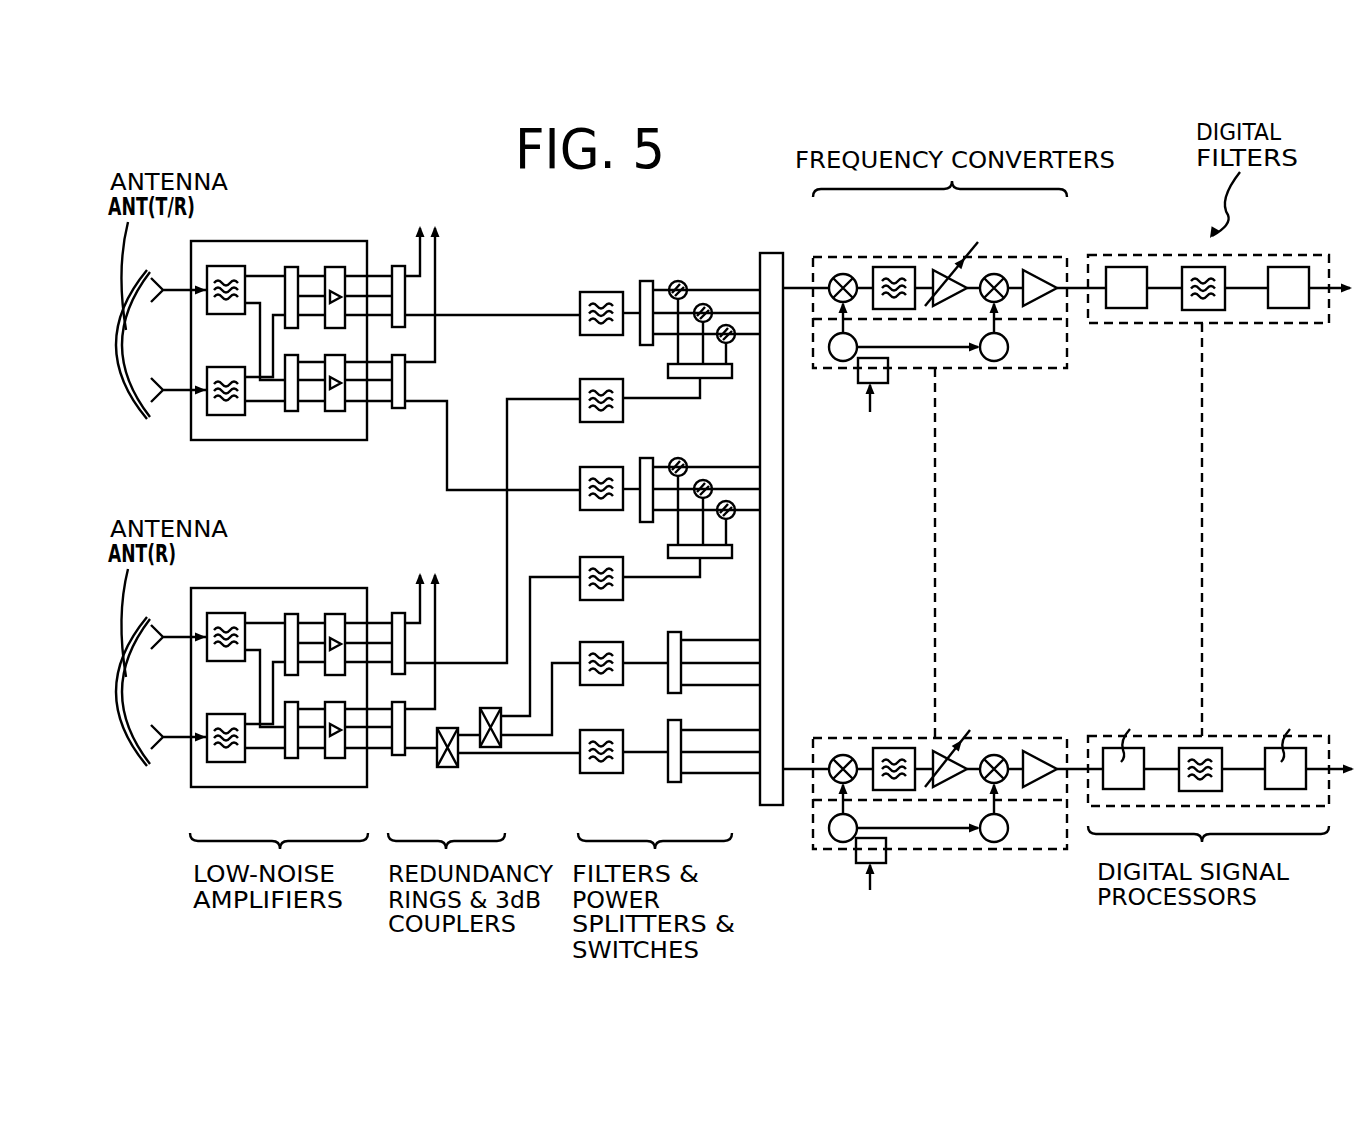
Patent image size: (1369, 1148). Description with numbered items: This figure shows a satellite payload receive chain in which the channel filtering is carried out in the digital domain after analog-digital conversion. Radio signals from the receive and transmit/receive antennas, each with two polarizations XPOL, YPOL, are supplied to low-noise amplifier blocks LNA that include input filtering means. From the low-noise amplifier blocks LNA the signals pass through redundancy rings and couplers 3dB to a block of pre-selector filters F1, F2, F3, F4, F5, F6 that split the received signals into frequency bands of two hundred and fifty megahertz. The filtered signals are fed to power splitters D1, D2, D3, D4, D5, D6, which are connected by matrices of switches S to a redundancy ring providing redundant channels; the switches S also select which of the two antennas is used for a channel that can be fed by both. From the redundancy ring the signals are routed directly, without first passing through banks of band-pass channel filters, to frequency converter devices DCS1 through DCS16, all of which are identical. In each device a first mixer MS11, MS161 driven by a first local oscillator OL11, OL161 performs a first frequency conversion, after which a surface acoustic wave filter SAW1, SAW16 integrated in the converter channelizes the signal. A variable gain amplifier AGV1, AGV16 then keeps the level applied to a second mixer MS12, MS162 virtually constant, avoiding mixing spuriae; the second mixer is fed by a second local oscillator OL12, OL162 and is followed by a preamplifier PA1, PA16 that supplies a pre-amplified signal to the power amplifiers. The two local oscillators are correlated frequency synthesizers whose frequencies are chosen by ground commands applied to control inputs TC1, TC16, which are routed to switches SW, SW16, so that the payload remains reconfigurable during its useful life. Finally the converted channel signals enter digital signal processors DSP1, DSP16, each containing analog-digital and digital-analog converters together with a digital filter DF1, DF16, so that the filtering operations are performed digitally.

The low-noise amplifier block LNA is at (265, 241).
The cross-polarization XPOL is at (165, 627).
The polarization YPOL is at (170, 779).
The 3dB coupler 3dB is at (490, 708).
The pre-selector filter F1 is at (601, 292).
The pre-selector filter F2 is at (594, 379).
The pre-selector filter F3 is at (590, 467).
The pre-selector filter F4 is at (592, 557).
The pre-selector filter F5 is at (592, 642).
The pre-selector filter F6 is at (600, 773).
The power splitter D1 is at (647, 281).
The power splitter D2 is at (720, 385).
The power splitter D3 is at (647, 458).
The power splitter D4 is at (720, 565).
The power splitter D5 is at (668, 685).
The power splitter D6 is at (672, 782).
The switch S is at (684, 283).
The first mixer MS11 is at (843, 274).
The surface acoustic wave filter SAW1 is at (913, 246).
The variable gain amplifier AGV1 is at (952, 264).
The second mixer MS12 is at (994, 274).
The preamplifier PA1 is at (1040, 270).
The first local oscillator OL11 is at (843, 361).
The second local oscillator OL12 is at (1008, 352).
The switch SW is at (873, 370).
The control input TC1 is at (872, 395).
The frequency converter device DCS1 is at (955, 368).
The first mixer MS161 is at (856, 727).
The surface acoustic wave filter SAW16 is at (894, 748).
The variable gain amplifier AGV16 is at (961, 745).
The second mixer MS162 is at (994, 755).
The preamplifier PA16 is at (1040, 752).
The first local oscillator OL161 is at (843, 842).
The second local oscillator OL162 is at (1008, 833).
The switch SW16 is at (871, 850).
The control input TC16 is at (872, 876).
The frequency converter device DCS16 is at (940, 849).
The digital signal processor DSP1 is at (1220, 303).
The digital filter DF1 is at (1215, 309).
The digital signal processor DSP16 is at (1221, 728).
The digital filter DF16 is at (1215, 748).